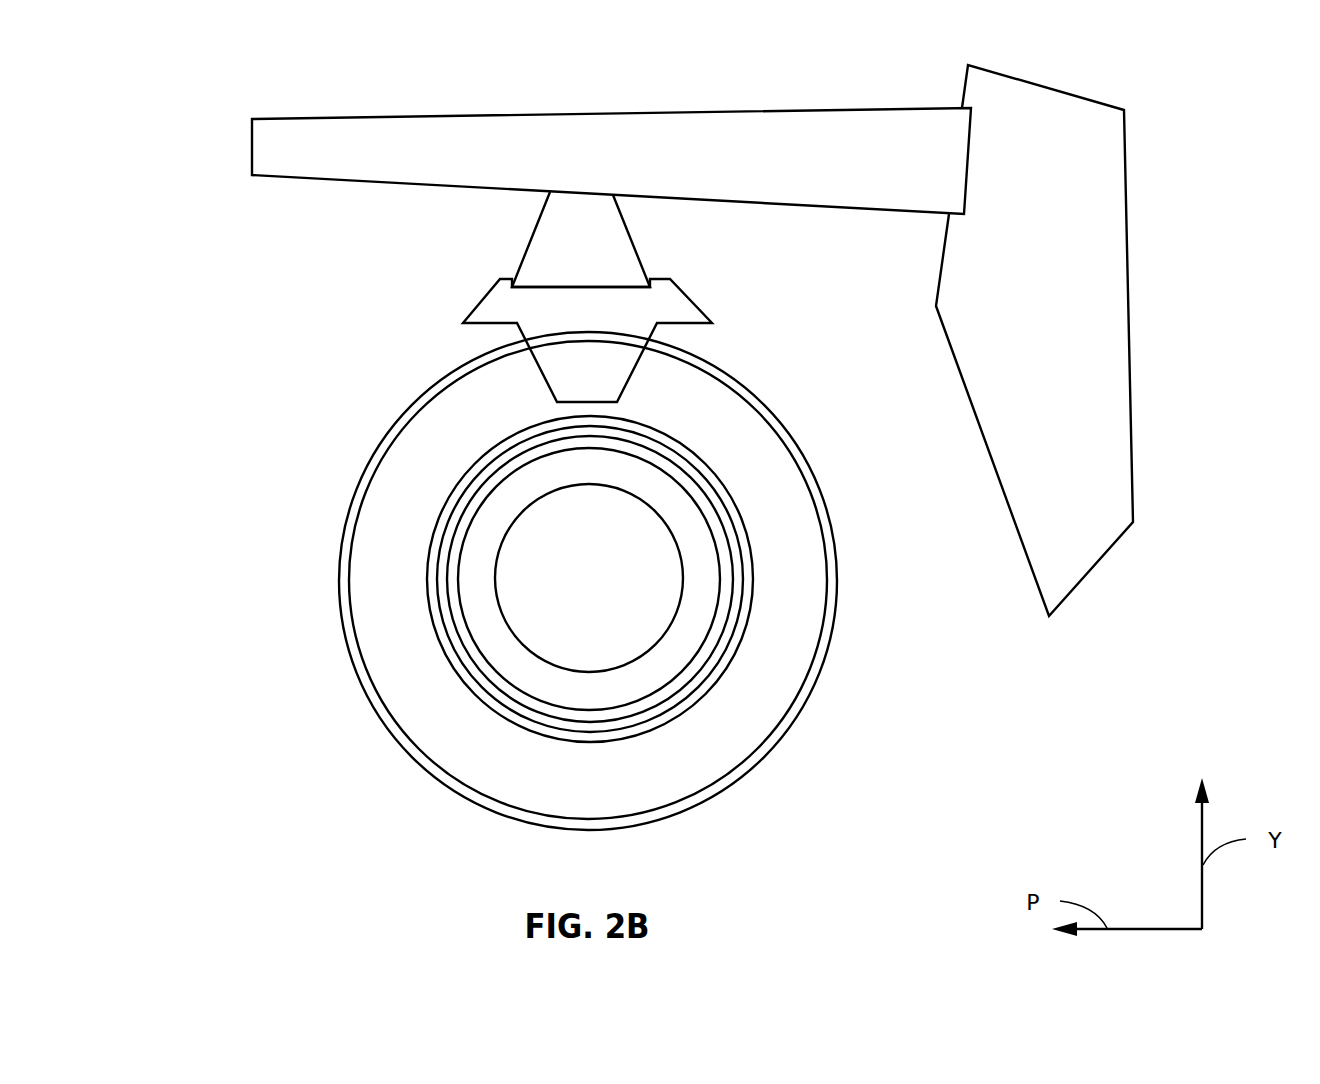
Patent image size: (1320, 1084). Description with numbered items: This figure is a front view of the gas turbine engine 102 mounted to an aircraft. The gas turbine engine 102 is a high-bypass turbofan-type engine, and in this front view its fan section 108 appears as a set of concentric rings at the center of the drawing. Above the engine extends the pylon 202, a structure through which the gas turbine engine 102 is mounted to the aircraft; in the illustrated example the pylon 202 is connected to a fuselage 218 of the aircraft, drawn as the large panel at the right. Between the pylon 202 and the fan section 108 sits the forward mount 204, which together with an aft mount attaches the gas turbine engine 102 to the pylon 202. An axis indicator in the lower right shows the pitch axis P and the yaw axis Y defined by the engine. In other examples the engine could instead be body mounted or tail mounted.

The gas turbine engine 102 is at (207, 188).
The fan section 108 is at (375, 447).
The pylon 202 is at (543, 114).
The forward mount 204 is at (533, 227).
The fuselage 218 is at (1127, 160).